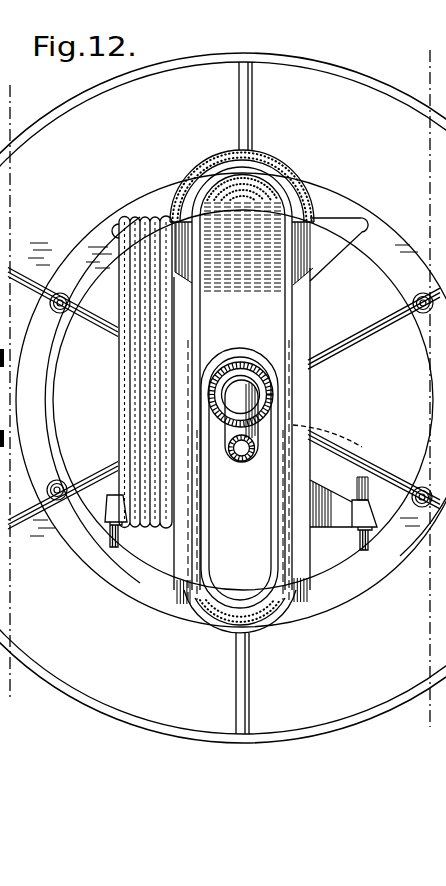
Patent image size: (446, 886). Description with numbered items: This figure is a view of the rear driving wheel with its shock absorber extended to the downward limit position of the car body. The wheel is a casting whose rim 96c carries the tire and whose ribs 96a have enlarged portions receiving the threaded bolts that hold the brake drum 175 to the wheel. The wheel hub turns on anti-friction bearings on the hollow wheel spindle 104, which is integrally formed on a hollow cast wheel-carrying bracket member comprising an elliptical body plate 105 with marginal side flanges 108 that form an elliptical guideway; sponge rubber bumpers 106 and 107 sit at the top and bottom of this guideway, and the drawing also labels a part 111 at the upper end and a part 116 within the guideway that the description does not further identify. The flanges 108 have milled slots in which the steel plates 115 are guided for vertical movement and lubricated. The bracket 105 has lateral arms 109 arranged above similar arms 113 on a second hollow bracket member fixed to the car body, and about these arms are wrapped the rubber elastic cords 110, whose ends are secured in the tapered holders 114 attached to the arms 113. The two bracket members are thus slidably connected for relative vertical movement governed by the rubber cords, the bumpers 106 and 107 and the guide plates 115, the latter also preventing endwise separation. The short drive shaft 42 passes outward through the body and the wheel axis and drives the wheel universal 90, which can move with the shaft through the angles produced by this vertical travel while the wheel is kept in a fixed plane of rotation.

The rim 96c is at (319, 60).
The ribs 96a is at (239, 100).
The brake drum 175 is at (87, 237).
The sponge rubber bumper 106 is at (256, 186).
The upper cap 111 is at (304, 201).
The lateral arms 109 is at (181, 280).
The rubber elastic cords 110 is at (172, 325).
The marginal side flanges 108 is at (292, 343).
The wheel universal 90 is at (262, 390).
The hollow wheel spindle 104 is at (272, 413).
The steel guide plates 115 is at (163, 626).
The drive shaft 42 is at (247, 463).
The cover plate 116 is at (203, 505).
The tapered holders 114 is at (109, 505).
The arms 113 is at (318, 530).
The sponge rubber bumper 107 is at (262, 622).
The elliptical body plate 105 is at (222, 633).